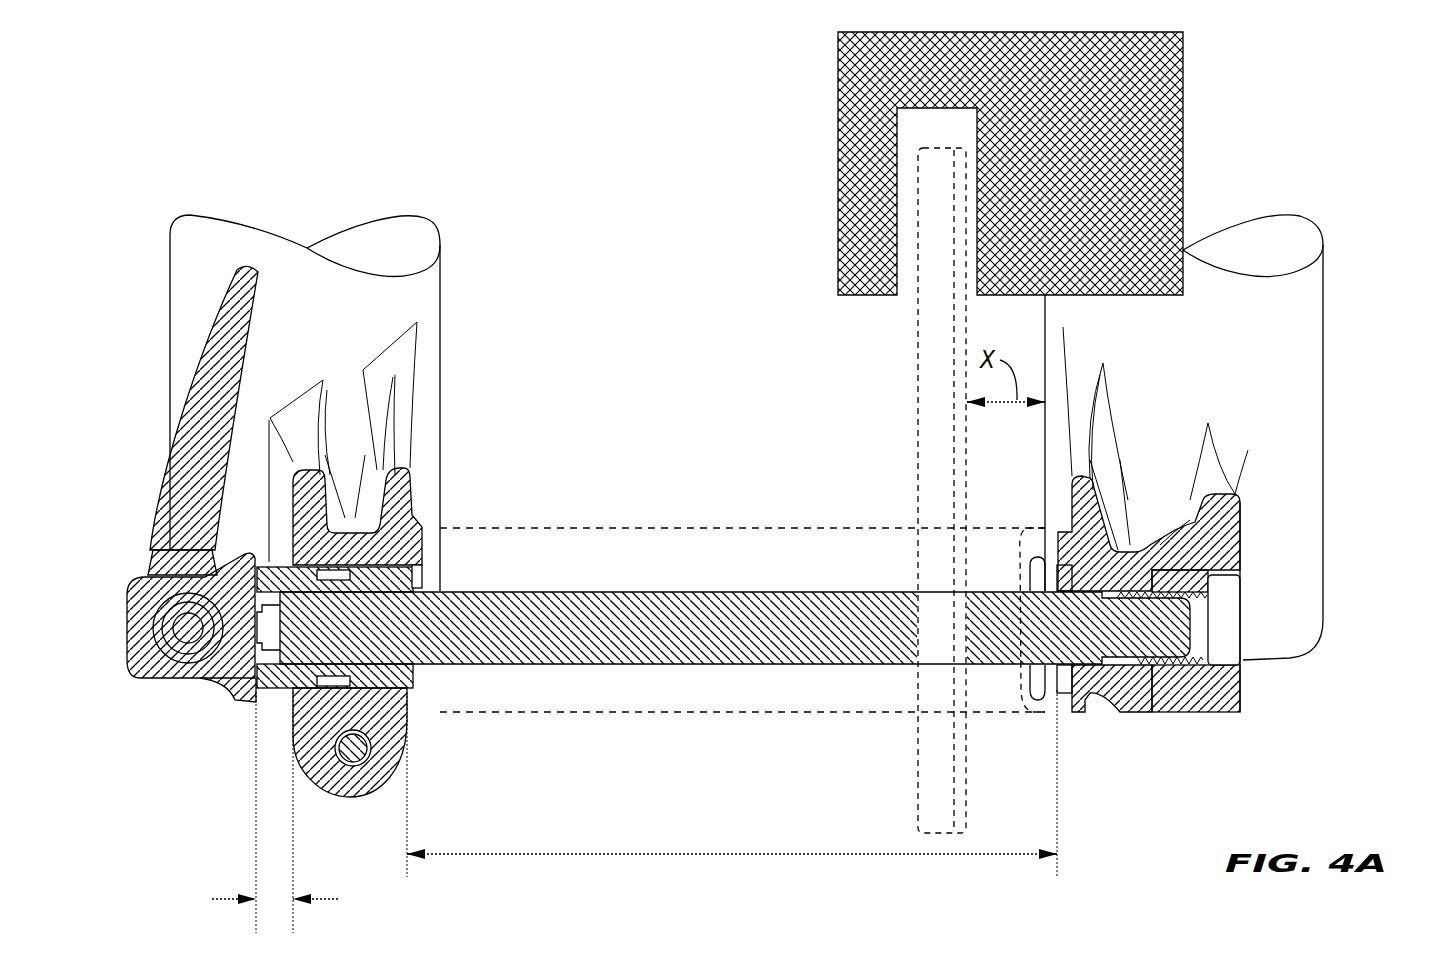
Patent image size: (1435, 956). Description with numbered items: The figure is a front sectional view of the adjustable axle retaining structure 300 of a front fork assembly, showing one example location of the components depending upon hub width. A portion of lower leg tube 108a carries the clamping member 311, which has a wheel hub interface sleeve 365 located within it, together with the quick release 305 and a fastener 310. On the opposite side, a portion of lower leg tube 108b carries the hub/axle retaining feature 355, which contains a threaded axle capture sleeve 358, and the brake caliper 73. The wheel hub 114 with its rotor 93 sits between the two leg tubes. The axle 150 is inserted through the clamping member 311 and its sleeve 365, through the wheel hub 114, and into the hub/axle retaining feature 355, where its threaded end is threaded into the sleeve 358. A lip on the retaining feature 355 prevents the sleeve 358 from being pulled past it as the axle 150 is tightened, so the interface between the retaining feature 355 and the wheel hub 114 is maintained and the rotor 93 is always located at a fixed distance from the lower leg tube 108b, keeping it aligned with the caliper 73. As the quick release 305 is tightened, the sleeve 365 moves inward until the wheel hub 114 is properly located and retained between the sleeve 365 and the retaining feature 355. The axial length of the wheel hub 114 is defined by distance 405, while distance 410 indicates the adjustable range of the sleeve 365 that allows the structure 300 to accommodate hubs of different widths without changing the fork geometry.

The adjustable axle retaining structure 300 is at (403, 103).
The brake caliper 73 is at (1183, 170).
The rotor 93 is at (916, 400).
The lower leg tube 108a is at (178, 318).
The lower leg tube 108b is at (1323, 430).
The wheel hub 114 is at (822, 527).
The axle 150 is at (710, 635).
The quick release 305 is at (125, 628).
The sleeve 365 is at (235, 705).
The clamping member 311 is at (300, 767).
The fastener 310 is at (367, 793).
The hub/axle retaining feature 355 is at (1107, 695).
The sleeve 358 is at (1200, 673).
The distance 405 is at (740, 858).
The distance 410 is at (227, 892).